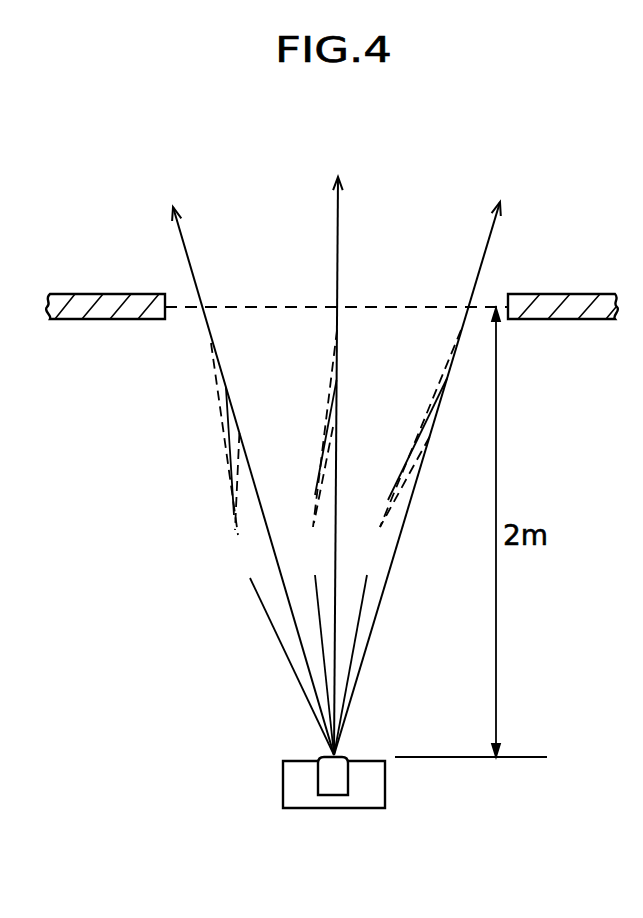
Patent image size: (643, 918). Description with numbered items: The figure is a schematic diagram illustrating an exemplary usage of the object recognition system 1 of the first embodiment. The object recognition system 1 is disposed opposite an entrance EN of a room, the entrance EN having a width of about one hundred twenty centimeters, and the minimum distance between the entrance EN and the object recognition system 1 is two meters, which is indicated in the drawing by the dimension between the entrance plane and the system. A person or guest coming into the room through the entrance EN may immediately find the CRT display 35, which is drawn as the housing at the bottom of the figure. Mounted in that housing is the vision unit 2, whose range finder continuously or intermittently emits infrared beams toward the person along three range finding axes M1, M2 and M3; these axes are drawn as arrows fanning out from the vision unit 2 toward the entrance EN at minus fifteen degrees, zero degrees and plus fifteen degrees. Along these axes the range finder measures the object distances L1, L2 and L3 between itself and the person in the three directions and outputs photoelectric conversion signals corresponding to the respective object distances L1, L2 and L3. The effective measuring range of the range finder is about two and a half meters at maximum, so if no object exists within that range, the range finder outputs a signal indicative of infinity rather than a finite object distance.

The object recognition system 1 is at (240, 745).
The vision unit 2 is at (333, 792).
The CRT display 35 is at (295, 788).
The range finding axis M1 is at (242, 451).
The range finding axis M2 is at (336, 436).
The range finding axis M3 is at (428, 448).
The object distance L1 is at (272, 549).
The object distance L2 is at (315, 542).
The object distance L3 is at (397, 542).
The entrance EN is at (397, 297).